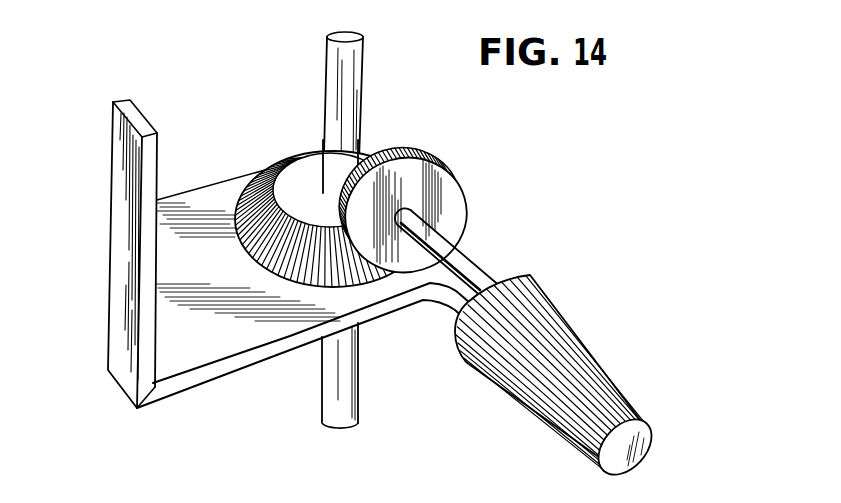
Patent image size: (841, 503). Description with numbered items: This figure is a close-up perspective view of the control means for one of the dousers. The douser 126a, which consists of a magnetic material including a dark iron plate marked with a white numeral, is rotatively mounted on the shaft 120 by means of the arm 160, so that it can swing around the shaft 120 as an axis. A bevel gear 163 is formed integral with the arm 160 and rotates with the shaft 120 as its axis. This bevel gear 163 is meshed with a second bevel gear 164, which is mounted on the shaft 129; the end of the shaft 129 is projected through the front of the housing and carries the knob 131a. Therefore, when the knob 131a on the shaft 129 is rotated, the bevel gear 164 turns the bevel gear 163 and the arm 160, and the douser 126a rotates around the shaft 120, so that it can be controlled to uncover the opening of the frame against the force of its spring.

The shaft 120 is at (363, 56).
The douser 126a is at (120, 176).
The shaft 129 is at (462, 258).
The knob 131a is at (493, 392).
The arm 160 is at (245, 342).
The bevel gear 163 is at (262, 183).
The bevel gear 164 is at (450, 170).